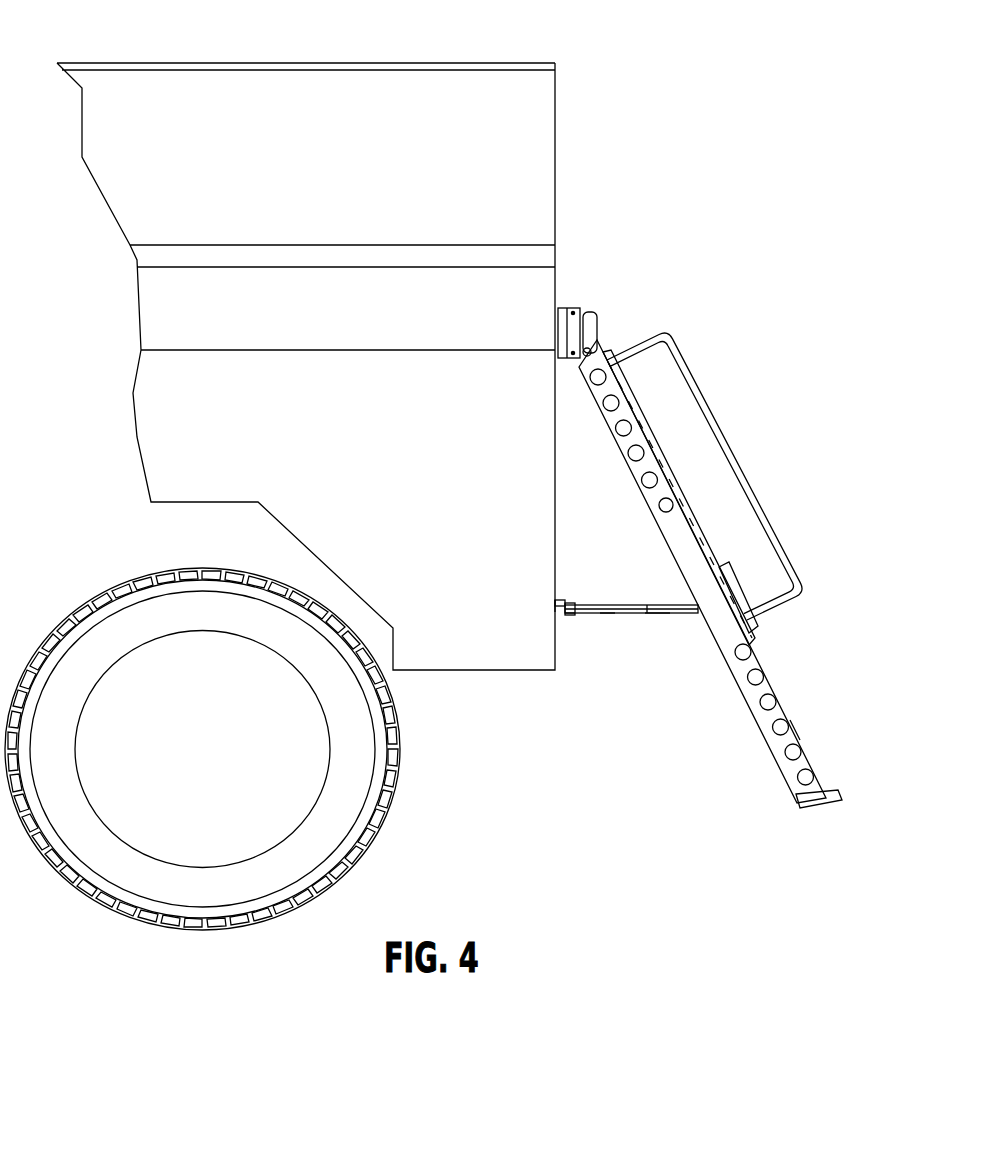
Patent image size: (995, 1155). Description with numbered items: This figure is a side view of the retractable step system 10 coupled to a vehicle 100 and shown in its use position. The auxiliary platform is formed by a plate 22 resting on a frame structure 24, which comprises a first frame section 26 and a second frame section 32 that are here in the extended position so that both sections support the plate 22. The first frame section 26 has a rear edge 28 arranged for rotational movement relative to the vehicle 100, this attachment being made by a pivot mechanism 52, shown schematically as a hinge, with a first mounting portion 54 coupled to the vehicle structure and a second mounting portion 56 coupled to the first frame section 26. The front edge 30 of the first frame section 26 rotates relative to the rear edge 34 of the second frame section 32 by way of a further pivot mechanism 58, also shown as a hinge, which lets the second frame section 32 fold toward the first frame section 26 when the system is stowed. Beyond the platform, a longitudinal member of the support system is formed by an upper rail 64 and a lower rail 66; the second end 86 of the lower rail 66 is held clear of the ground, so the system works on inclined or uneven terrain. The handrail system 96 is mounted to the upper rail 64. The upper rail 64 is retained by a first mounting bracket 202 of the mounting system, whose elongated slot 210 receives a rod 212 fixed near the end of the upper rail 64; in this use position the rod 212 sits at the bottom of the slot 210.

The vehicle 100 is at (578, 107).
The first mounting bracket 202 is at (565, 306).
The slot 210 is at (591, 313).
The rod 212 is at (584, 358).
The handrail system 96 is at (705, 378).
The retractable step system 10 is at (813, 633).
The upper rail 64 is at (662, 470).
The second frame section 32 is at (703, 615).
The lower rail 66 is at (797, 720).
The second end of lower rail 86 is at (832, 790).
The plate 22 is at (645, 605).
The second mounting portion 56 is at (575, 606).
The pivot mechanism 52 is at (563, 600).
The first mounting portion 54 is at (555, 602).
The front edge of first frame section 30 is at (641, 613).
The pivot mechanism 58 is at (650, 614).
The rear edge of second frame section 34 is at (660, 614).
The first frame section 26 is at (608, 613).
The rear edge of first frame section 28 is at (566, 614).
The frame structure 24 is at (587, 645).